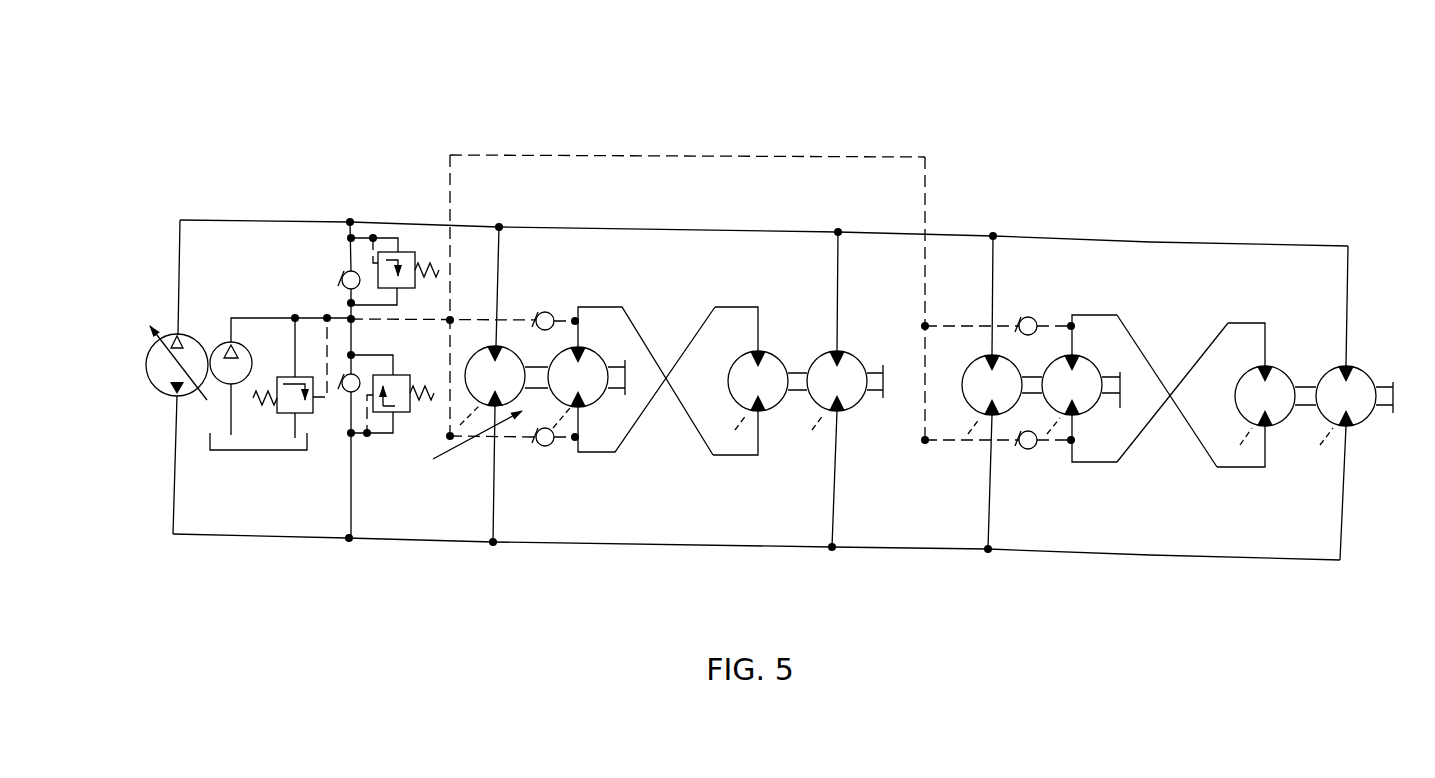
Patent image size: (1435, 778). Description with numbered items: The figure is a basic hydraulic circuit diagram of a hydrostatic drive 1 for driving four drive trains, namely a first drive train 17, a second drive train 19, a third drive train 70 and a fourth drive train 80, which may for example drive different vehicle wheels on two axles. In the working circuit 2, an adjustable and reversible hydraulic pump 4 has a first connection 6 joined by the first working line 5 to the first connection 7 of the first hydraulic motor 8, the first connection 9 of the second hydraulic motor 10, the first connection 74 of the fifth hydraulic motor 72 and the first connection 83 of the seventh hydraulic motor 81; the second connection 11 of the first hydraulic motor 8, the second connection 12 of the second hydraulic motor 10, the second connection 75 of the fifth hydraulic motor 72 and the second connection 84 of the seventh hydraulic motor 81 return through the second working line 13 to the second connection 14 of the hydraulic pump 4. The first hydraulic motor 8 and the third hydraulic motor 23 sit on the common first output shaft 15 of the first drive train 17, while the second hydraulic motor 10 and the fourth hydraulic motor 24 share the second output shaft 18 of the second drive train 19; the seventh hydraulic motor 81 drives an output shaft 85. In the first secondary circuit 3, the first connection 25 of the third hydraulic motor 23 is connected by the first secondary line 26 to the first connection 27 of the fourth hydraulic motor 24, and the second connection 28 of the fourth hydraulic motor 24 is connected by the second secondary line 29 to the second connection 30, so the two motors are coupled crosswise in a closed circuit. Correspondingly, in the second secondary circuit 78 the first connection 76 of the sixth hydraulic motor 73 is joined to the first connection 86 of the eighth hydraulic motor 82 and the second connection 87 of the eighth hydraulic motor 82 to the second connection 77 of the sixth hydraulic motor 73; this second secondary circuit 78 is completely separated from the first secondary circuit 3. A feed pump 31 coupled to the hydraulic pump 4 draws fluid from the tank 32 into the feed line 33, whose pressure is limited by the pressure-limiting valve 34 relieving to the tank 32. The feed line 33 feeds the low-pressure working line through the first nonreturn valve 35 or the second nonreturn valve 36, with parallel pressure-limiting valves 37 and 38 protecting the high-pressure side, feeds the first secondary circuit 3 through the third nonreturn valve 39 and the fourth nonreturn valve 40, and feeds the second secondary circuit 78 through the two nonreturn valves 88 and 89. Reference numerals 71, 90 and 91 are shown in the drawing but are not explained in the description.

The hydrostatic drive 1 is at (965, 165).
The working circuit 2 is at (373, 218).
The secondary circuit 3 is at (690, 325).
The hydraulic pump 4 is at (165, 375).
The first working line 5 is at (224, 218).
The first connection of the hydraulic pump 6 is at (176, 334).
The first connection of the first hydraulic motor 7 is at (495, 344).
The first hydraulic motor 8 is at (466, 374).
The first connection of the second hydraulic motor 9 is at (834, 348).
The second hydraulic motor 10 is at (851, 370).
The second connection of the first hydraulic motor 11 is at (464, 450).
The second connection of the second hydraulic motor 12 is at (839, 416).
The second working line 13 is at (260, 540).
The second connection of the hydraulic pump 14 is at (176, 397).
The first output shaft 15 is at (541, 374).
The first drive train 17 is at (488, 432).
The second output shaft 18 is at (878, 394).
The second drive train 19 is at (851, 330).
The third hydraulic motor 23 is at (585, 396).
The fourth hydraulic motor 24 is at (745, 383).
The first connection of the third hydraulic motor 25 is at (584, 346).
The first secondary line 26 is at (622, 307).
The first connection of the fourth hydraulic motor 27 is at (763, 413).
The second connection of the fourth hydraulic motor 28 is at (757, 349).
The second secondary line 29 is at (613, 454).
The second connection of the third hydraulic motor 30 is at (578, 413).
The feed pump 31 is at (233, 385).
The tank 32 is at (228, 450).
The feed line 33 is at (418, 318).
The pressure-limiting valve 34 is at (286, 384).
The first nonreturn valve 35 is at (340, 287).
The second nonreturn valve 36 is at (344, 392).
The pressure-limiting valve 37 is at (406, 258).
The pressure-limiting valve 38 is at (403, 420).
The third nonreturn valve 39 is at (546, 311).
The fourth nonreturn valve 40 is at (543, 448).
The third drive train 70 is at (1036, 368).
The output shaft 71 is at (1113, 396).
The fifth hydraulic motor 72 is at (975, 385).
The sixth hydraulic motor 73 is at (1088, 381).
The first connection of the fifth hydraulic motor 74 is at (990, 355).
The second connection of the fifth hydraulic motor 75 is at (989, 420).
The first connection of the sixth hydraulic motor 76 is at (1074, 353).
The second connection of the sixth hydraulic motor 77 is at (1073, 420).
The second secondary circuit 78 is at (1191, 348).
The fourth drive train 80 is at (1312, 377).
The seventh hydraulic motor 81 is at (1338, 408).
The eighth hydraulic motor 82 is at (1250, 398).
The first connection of the seventh hydraulic motor 83 is at (1350, 367).
The second connection of the seventh hydraulic motor 84 is at (1348, 432).
The output shaft 85 is at (1384, 408).
The first connection of the eighth hydraulic motor 86 is at (1265, 428).
The second connection of the eighth hydraulic motor 87 is at (1267, 366).
The nonreturn valve 88 is at (1023, 317).
The nonreturn valve 89 is at (1023, 450).
The crossover line 90 is at (1140, 347).
The crossover line 91 is at (1196, 439).